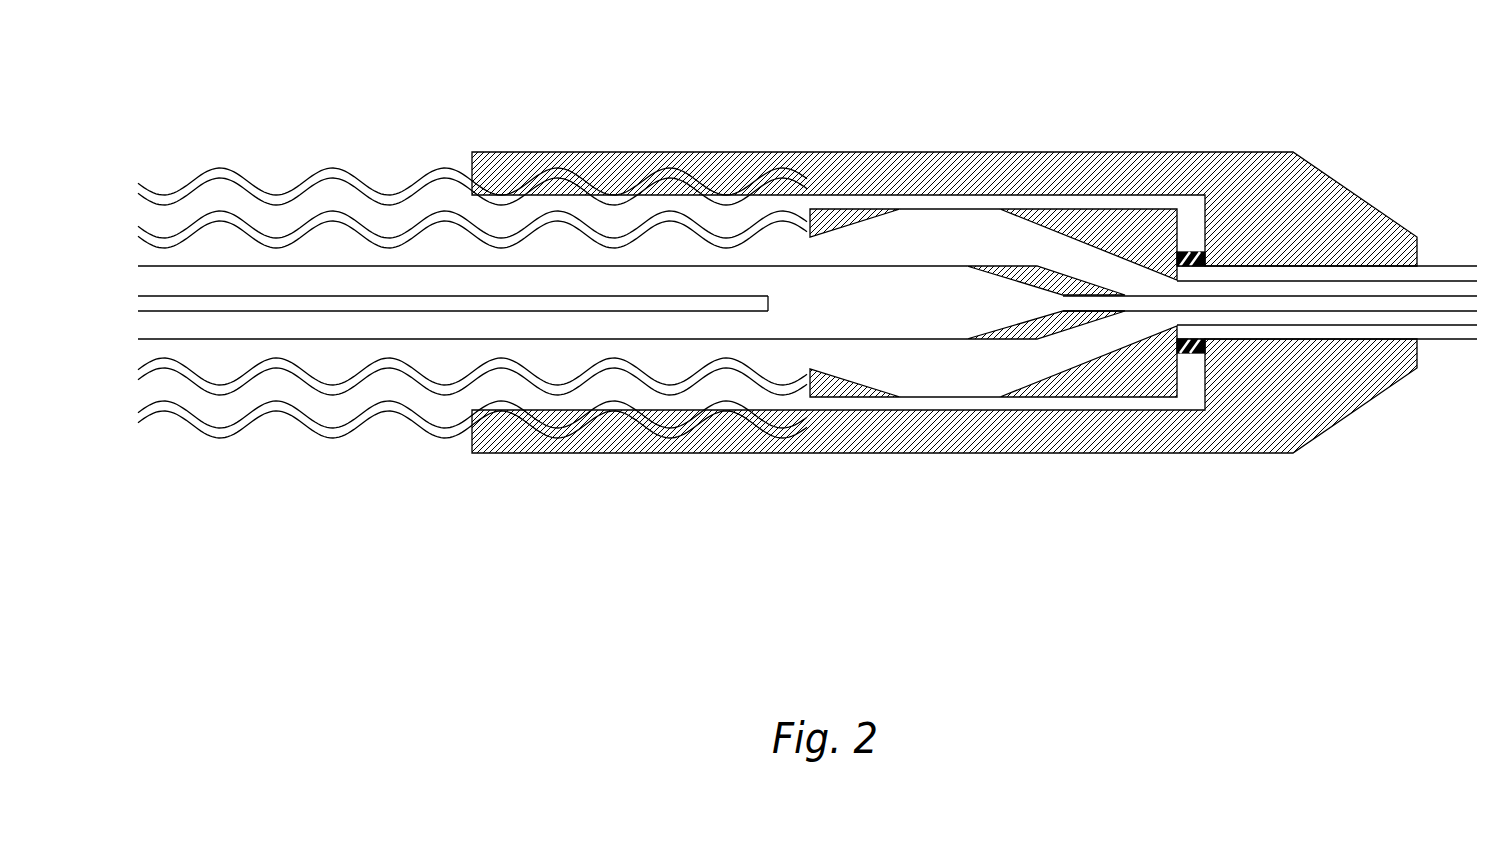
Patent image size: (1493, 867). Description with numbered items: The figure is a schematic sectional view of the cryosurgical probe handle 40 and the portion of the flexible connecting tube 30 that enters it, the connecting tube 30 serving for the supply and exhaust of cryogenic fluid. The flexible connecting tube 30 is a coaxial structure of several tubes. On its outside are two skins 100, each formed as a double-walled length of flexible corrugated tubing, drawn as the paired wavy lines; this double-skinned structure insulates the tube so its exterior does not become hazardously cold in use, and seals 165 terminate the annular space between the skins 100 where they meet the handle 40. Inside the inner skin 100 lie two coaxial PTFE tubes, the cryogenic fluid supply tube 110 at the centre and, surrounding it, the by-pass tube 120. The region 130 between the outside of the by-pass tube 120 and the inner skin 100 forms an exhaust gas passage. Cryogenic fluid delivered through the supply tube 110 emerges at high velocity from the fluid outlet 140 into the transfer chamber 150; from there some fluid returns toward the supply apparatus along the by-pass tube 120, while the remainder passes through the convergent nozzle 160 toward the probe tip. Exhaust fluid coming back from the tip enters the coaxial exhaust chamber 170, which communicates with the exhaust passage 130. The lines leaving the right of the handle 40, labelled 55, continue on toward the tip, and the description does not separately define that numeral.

The flexible connecting tube 30 is at (278, 195).
The probe handle 40 is at (1143, 152).
The optical fiber bundle 55 is at (1455, 266).
The skins 100 is at (172, 240).
The cryogenic fluid supply tube 110 is at (192, 298).
The by-pass tube 120 is at (443, 280).
The exhaust gas passage 130 is at (332, 250).
The fluid outlet 140 is at (770, 308).
The transfer chamber 150 is at (897, 296).
The convergent nozzle 160 is at (1038, 300).
The seals 165 is at (1188, 353).
The coaxial exhaust chamber 170 is at (917, 237).